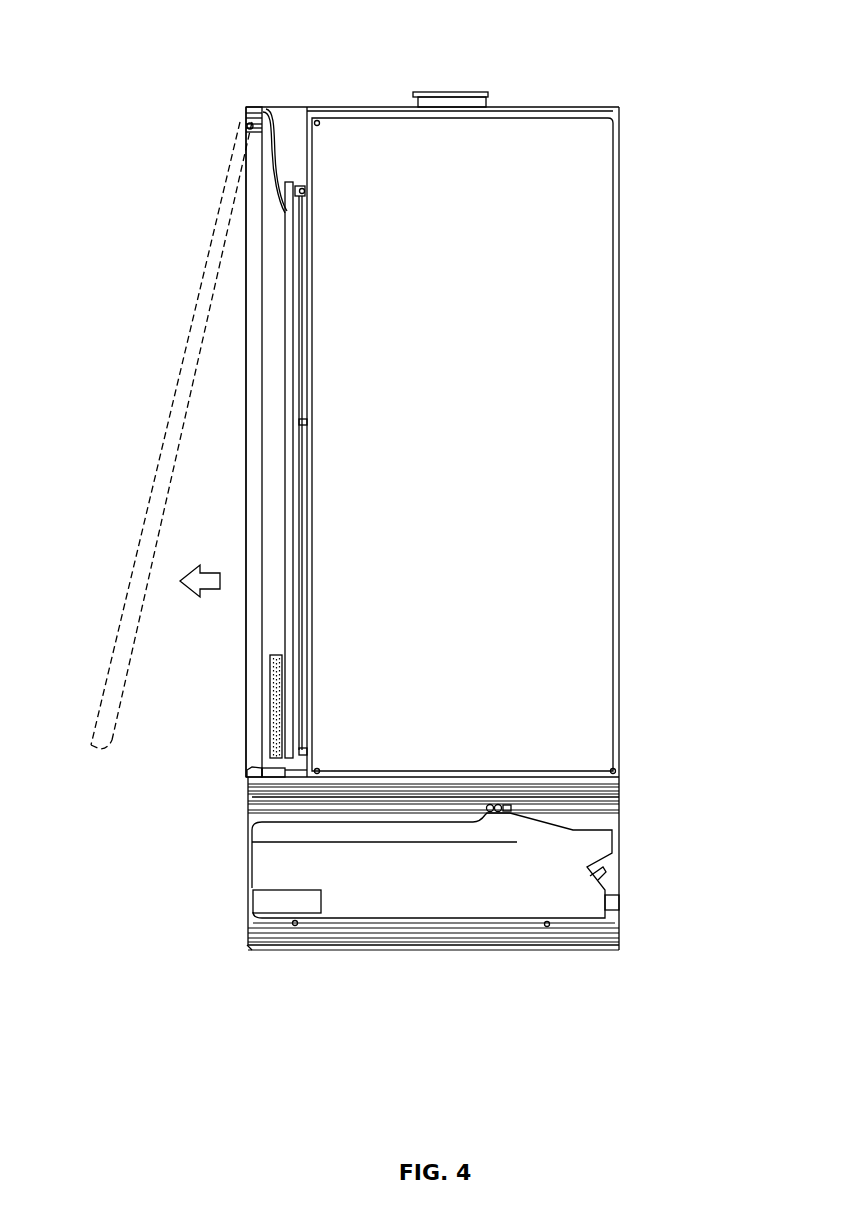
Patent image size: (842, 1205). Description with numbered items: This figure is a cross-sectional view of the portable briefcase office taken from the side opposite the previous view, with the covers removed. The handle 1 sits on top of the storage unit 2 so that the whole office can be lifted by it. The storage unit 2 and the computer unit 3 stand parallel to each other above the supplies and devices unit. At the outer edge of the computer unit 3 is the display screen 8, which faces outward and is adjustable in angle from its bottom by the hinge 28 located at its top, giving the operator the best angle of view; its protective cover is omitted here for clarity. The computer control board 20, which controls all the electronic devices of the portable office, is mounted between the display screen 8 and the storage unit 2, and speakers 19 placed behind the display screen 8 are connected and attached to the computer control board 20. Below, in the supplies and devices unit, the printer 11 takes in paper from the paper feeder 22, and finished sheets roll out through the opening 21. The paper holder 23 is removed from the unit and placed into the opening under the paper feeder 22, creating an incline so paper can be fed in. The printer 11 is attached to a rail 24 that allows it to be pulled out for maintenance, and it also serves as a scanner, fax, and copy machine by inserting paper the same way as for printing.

The handle 1 is at (460, 92).
The storage unit 2 is at (540, 423).
The computer unit 3 is at (270, 363).
The display screen 8 is at (142, 600).
The printer 11 is at (531, 887).
The speakers 19 is at (272, 678).
The computer control board 20 is at (293, 275).
The opening 21 is at (283, 898).
The paper feeder 22 is at (605, 866).
The paper holder 23 is at (612, 795).
The rail 24 is at (503, 807).
The hinge 28 is at (246, 122).